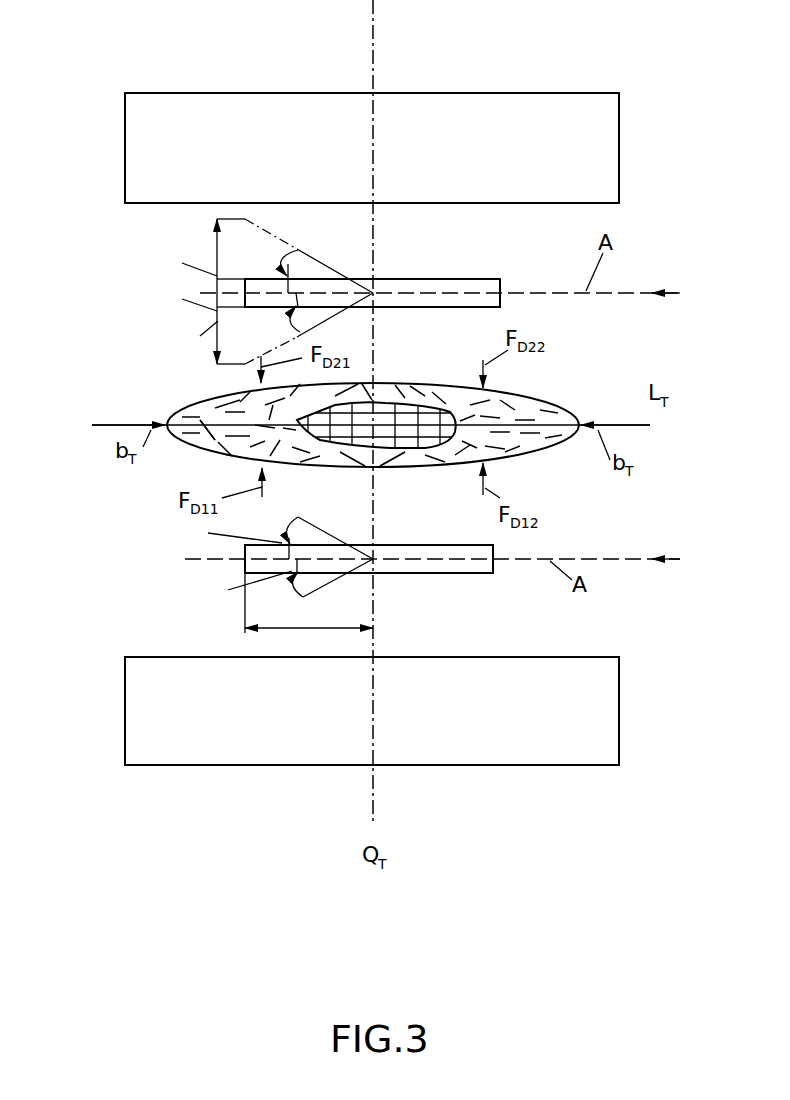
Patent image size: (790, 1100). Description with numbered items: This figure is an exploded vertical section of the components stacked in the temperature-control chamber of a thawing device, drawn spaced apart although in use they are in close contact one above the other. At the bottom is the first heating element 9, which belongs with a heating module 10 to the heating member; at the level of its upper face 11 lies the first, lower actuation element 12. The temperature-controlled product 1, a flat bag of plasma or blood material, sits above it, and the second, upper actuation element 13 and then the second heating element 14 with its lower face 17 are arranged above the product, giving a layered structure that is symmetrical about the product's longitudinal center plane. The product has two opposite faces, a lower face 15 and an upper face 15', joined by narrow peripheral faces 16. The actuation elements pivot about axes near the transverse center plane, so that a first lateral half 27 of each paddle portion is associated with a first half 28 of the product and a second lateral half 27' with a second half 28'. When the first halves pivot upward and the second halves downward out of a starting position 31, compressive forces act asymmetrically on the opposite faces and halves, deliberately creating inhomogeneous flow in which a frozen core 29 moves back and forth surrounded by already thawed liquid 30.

The temperature-controlled product 1 is at (533, 390).
The first heating element 9 is at (535, 745).
The heating module 10 is at (80, 850).
The upper face 11 is at (548, 656).
The first actuation element 12 is at (455, 565).
The second actuation element 13 is at (487, 289).
The second heating element 14 is at (527, 106).
The lower face 15 is at (401, 485).
The upper face 15' is at (439, 364).
The narrow peripheral faces 16 is at (176, 416).
The lower face 17 is at (550, 205).
The first lateral half 27 is at (240, 429).
The second lateral half 27' is at (430, 428).
The first half 28 is at (160, 378).
The second half 28' is at (549, 470).
The frozen core 29 is at (380, 408).
The thawed liquid 30 is at (200, 438).
The starting position 31 is at (681, 426).